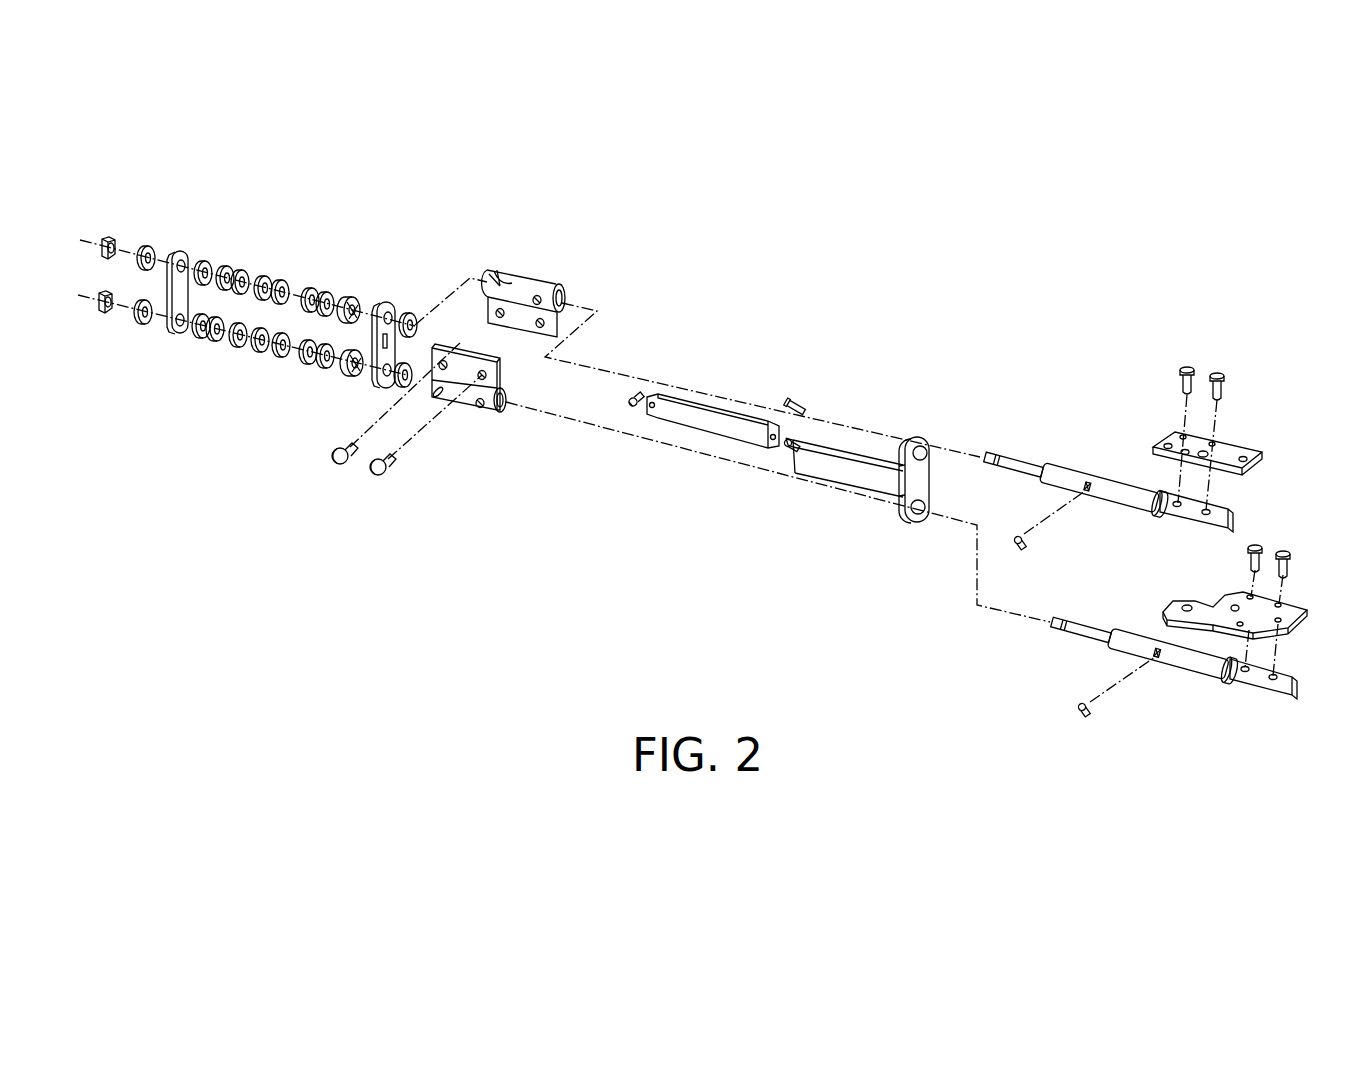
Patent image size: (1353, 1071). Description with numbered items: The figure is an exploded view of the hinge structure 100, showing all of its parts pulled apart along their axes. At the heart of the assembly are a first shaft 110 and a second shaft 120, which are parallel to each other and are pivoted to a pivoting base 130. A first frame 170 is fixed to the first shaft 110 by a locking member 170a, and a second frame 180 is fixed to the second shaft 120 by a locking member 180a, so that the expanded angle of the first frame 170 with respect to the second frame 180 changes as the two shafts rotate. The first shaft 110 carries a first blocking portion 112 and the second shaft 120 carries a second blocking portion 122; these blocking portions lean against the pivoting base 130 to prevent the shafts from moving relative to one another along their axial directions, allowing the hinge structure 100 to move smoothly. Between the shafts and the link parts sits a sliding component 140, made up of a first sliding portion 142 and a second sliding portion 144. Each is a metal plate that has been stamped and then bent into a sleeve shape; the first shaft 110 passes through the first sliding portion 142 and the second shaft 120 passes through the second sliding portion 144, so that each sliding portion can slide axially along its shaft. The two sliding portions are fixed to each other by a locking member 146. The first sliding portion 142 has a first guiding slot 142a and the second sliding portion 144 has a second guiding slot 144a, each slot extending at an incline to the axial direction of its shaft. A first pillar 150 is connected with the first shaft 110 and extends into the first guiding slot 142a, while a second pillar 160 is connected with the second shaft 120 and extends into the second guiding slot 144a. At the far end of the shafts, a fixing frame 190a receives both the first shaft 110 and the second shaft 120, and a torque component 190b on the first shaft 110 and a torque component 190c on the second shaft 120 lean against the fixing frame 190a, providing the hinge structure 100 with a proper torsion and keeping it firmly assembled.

The hinge structure 100 is at (1343, 260).
The first shaft 110 is at (1060, 473).
The first blocking portion 112 is at (1177, 498).
The second shaft 120 is at (1125, 647).
The second blocking portion 122 is at (1228, 673).
The pivoting base 130 is at (860, 478).
The sliding component 140 is at (595, 511).
The first sliding portion 142 is at (526, 336).
The first guiding slot 142a is at (497, 281).
The second sliding portion 144 is at (485, 413).
The second guiding slot 144a is at (443, 402).
The locking member 146 is at (379, 475).
The first pillar 150 is at (1019, 538).
The second pillar 160 is at (1087, 709).
The first frame 170 is at (1228, 447).
The locking member 170a is at (1217, 370).
The second frame 180 is at (1295, 608).
The locking member 180a is at (1283, 552).
The fixing frame 190a is at (180, 249).
The torque component 190b is at (347, 280).
The torque component 190c is at (317, 382).